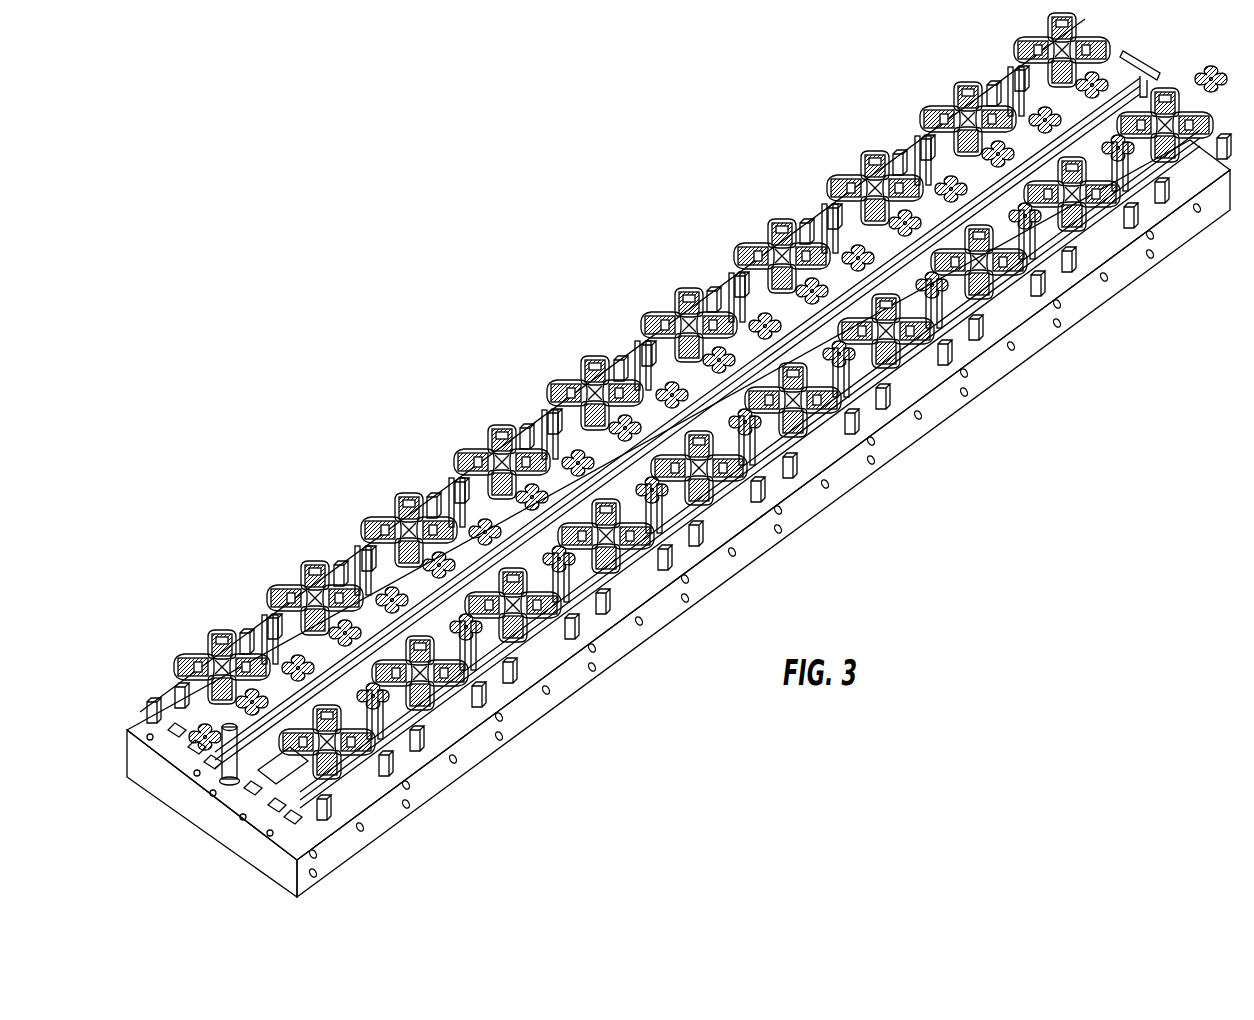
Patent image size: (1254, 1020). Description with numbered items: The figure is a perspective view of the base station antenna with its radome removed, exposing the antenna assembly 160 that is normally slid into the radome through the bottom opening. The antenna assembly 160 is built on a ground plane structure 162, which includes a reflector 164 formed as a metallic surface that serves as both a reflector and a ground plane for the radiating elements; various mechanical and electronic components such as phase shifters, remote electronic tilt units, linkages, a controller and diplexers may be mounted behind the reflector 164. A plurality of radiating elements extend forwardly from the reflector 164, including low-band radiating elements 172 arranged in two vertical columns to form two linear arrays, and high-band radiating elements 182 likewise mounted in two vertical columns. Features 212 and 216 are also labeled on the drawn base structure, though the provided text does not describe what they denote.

The antenna assembly 160 is at (434, 274).
The ground plane structure 162 is at (1008, 367).
The reflector 164 is at (167, 742).
The low-band radiating element 172 is at (307, 571).
The high-band radiating element 182 is at (618, 603).
The end wall of base 212 is at (130, 780).
The front wall of base 216 is at (242, 866).